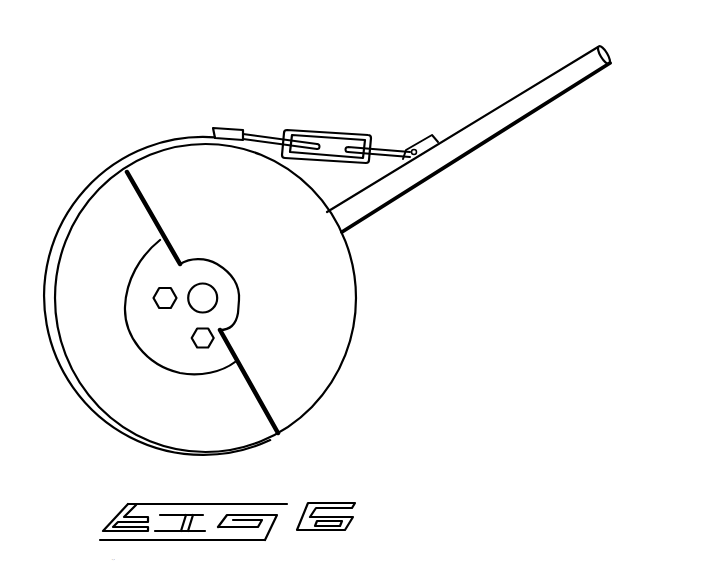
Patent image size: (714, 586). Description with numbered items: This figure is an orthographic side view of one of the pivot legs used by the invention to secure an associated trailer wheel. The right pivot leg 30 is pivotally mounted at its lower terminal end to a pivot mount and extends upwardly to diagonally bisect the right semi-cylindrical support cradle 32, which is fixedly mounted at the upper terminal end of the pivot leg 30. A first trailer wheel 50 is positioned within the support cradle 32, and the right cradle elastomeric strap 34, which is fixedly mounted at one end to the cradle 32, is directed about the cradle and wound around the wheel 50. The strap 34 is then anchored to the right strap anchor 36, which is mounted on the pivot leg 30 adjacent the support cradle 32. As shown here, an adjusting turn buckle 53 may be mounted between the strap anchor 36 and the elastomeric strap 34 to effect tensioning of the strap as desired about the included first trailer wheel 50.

The right pivot leg 30 is at (528, 93).
The right semi-cylindrical support cradle 32 is at (333, 318).
The right cradle elastomeric strap 34 is at (165, 137).
The right strap anchor 36 is at (427, 140).
The first trailer wheel 50 is at (237, 432).
The adjusting turn buckle 53 is at (340, 130).